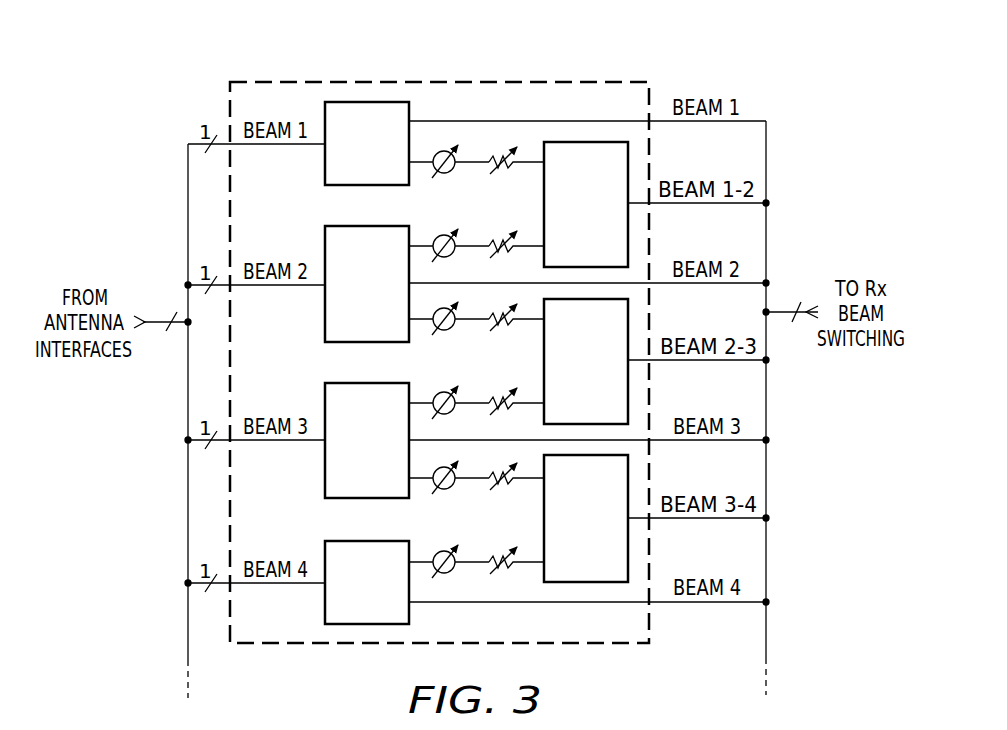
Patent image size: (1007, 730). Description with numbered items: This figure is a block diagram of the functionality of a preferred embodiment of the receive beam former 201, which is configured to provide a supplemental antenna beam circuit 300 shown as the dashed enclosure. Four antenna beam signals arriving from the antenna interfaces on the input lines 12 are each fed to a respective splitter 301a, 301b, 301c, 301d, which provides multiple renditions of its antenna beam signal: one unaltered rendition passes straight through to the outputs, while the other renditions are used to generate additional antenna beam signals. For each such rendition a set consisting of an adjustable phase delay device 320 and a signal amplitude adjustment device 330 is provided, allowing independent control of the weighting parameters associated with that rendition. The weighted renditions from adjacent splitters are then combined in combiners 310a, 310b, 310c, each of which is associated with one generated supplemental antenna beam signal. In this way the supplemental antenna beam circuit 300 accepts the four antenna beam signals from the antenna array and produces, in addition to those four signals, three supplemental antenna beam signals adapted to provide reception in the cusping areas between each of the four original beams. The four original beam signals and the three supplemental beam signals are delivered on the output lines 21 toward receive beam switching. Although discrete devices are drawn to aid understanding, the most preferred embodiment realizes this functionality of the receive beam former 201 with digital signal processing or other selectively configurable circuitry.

The receive beam former 201 is at (439, 321).
The supplemental antenna beam circuit 300 is at (292, 82).
The input lines from antenna interfaces 12 is at (162, 421).
The output lines to Rx beam switching 21 is at (790, 408).
The splitter 301a is at (393, 157).
The splitter 301b is at (393, 297).
The splitter 301c is at (393, 454).
The splitter 301d is at (393, 596).
The combiner 310a is at (612, 217).
The combiner 310b is at (612, 374).
The combiner 310c is at (612, 532).
The adjustable phase delay device 320 is at (448, 174).
The signal amplitude adjustment device 330 is at (507, 174).